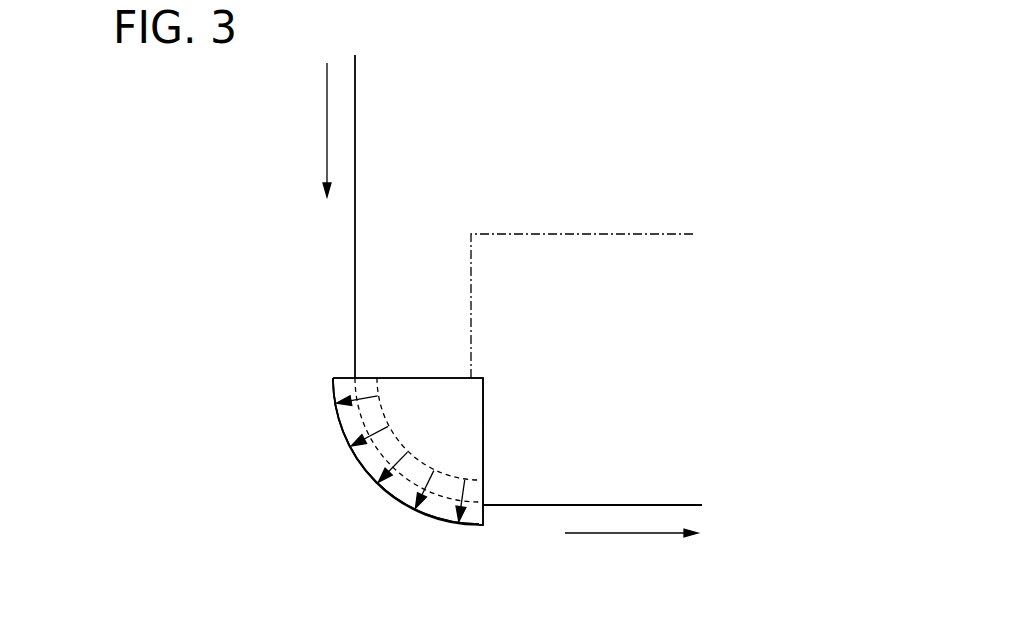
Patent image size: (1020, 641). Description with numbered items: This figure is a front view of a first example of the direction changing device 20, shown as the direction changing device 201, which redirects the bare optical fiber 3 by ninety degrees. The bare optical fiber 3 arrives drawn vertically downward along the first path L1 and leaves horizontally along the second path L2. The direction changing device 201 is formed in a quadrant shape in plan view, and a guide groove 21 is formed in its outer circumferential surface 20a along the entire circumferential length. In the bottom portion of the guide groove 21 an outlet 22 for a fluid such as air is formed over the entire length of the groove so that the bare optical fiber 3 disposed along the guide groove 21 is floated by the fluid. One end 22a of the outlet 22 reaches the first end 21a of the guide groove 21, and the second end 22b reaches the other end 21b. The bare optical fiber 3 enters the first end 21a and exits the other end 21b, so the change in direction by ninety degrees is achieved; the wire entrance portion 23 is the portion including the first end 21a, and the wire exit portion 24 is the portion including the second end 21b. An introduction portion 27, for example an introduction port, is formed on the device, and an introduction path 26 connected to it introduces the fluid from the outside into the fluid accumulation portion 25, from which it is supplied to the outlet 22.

The bare optical fiber 3 is at (355, 122).
The first path L1 is at (355, 183).
The second path L2 is at (650, 505).
The direction changing device 20 is at (459, 423).
The direction changing device 201 is at (447, 378).
The outer circumferential surface 20a is at (352, 452).
The guide groove 21 is at (402, 487).
The outlet 22 is at (435, 482).
The first end of the guide groove 21a is at (376, 378).
The one end of the outlet 22a is at (409, 329).
The other end of the guide groove 21b is at (490, 504).
The second end of the outlet 22b is at (538, 540).
The wire entrance portion 23 is at (348, 385).
The wire exit portion 24 is at (470, 527).
The fluid accumulation portion 25 is at (447, 410).
The introduction path 26 is at (655, 234).
The introduction portion 27 is at (470, 378).